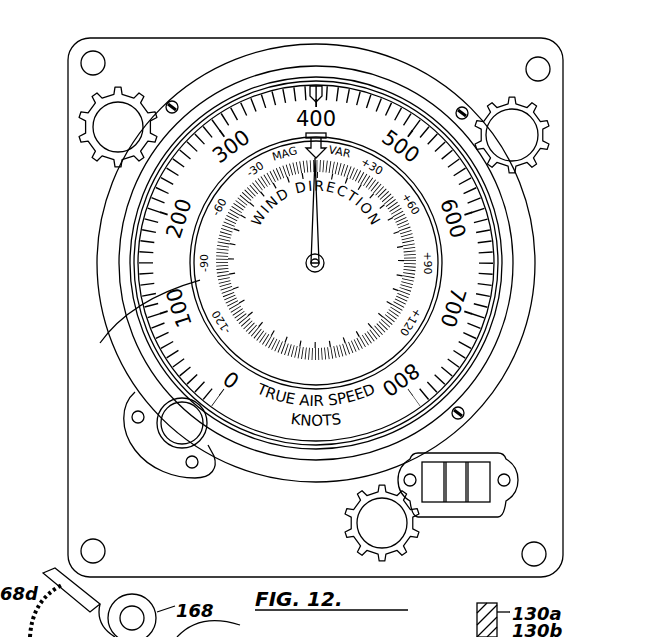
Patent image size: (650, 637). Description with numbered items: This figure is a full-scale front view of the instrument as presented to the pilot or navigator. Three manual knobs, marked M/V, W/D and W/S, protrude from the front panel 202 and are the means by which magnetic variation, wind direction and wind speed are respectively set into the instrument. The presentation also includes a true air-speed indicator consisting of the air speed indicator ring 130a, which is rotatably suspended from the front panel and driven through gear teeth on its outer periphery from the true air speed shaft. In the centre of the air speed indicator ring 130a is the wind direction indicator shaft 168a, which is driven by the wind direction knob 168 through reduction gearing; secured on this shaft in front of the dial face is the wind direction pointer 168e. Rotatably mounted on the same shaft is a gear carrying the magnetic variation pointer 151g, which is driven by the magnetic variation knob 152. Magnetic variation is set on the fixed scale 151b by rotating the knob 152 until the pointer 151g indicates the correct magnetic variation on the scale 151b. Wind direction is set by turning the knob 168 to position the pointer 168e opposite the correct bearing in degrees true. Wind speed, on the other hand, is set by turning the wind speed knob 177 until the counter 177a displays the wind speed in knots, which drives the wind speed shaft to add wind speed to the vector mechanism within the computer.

The front panel 202 is at (562, 270).
The air speed indicator ring 130a is at (493, 250).
The magnetic variation pointer 151g is at (330, 136).
The fixed scale 151b is at (138, 331).
The magnetic variation knob 152 is at (84, 146).
The wind direction knob 168 is at (540, 148).
The wind direction indicator shaft 168a is at (317, 270).
The wind direction pointer 168e is at (313, 237).
The wind speed knob 177 is at (420, 538).
The counter 177a is at (481, 462).